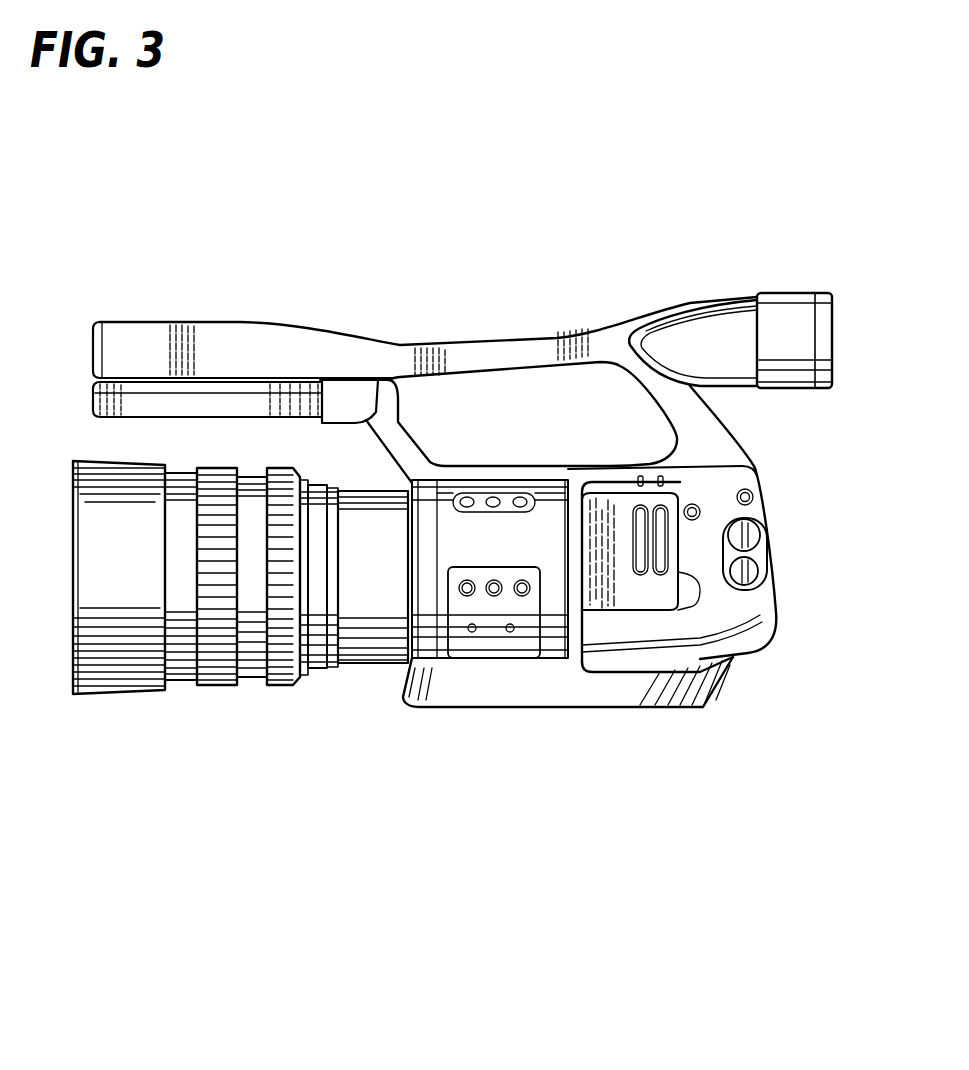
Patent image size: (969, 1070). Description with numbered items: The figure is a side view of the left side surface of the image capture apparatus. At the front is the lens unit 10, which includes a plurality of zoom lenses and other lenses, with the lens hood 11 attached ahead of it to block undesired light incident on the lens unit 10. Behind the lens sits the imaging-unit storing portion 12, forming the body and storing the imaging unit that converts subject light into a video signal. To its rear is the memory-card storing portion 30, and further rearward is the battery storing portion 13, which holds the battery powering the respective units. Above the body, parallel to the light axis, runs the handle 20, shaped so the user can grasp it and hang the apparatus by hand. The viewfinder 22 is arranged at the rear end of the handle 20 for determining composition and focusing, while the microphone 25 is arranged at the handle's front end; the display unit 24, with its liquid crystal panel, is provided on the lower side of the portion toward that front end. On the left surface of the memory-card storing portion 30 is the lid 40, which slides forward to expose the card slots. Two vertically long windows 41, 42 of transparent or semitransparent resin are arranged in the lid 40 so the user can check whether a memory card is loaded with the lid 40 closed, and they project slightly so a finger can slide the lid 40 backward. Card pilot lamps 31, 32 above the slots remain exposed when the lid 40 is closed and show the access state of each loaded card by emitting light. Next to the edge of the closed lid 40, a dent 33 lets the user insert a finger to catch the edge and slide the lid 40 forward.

The lens unit 10 is at (252, 668).
The lens hood 11 is at (115, 682).
The imaging-unit storing portion 12 is at (495, 640).
The battery storing portion 13 is at (763, 507).
The handle 20 is at (483, 345).
The viewfinder 22 is at (785, 298).
The display unit 24 is at (172, 410).
The microphone 25 is at (93, 342).
The memory-card storing portion 30 is at (748, 622).
The card pilot lamp 31 is at (640, 478).
The card pilot lamp 32 is at (660, 478).
The dent 33 is at (690, 595).
The lid 40 is at (592, 596).
The window 41 is at (640, 578).
The window 42 is at (660, 578).